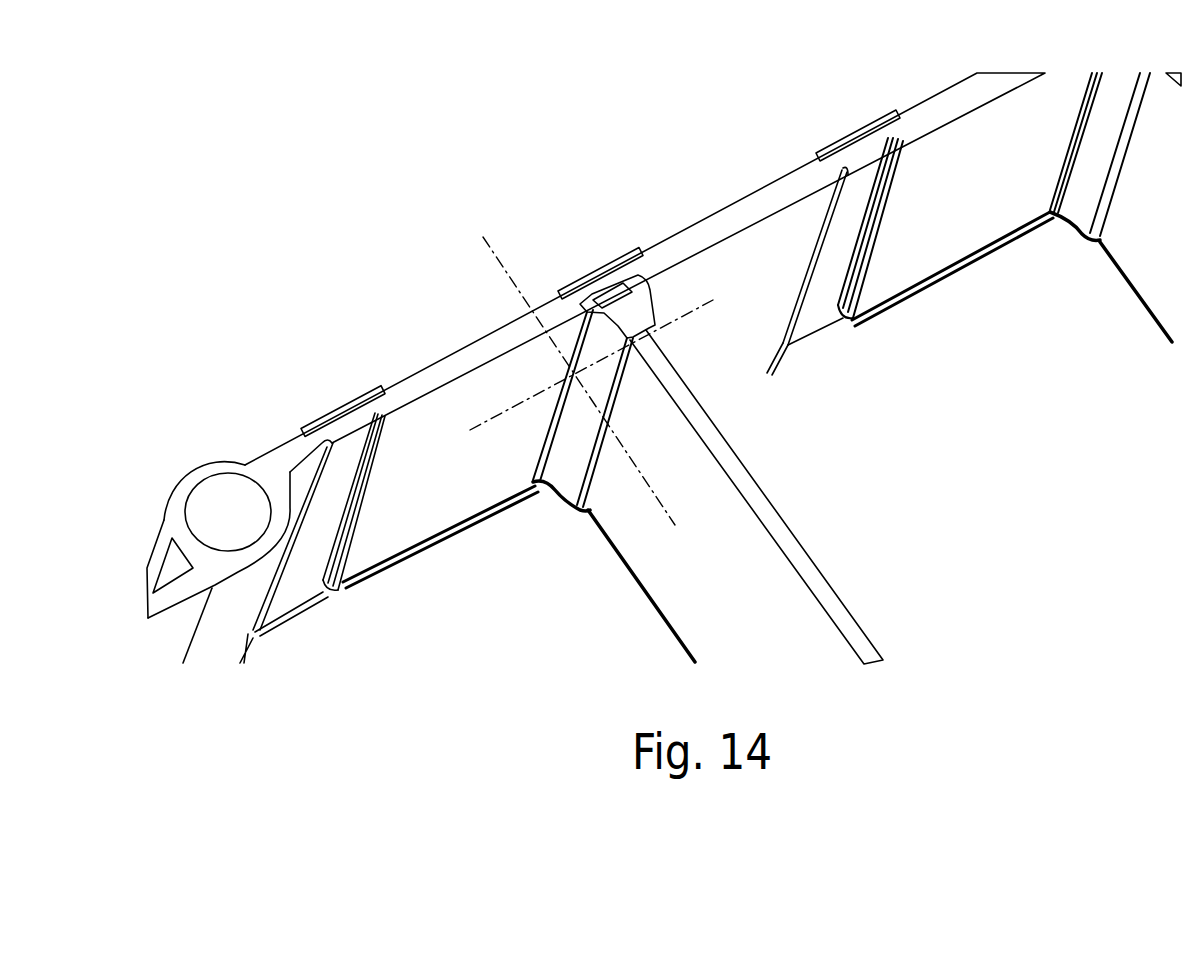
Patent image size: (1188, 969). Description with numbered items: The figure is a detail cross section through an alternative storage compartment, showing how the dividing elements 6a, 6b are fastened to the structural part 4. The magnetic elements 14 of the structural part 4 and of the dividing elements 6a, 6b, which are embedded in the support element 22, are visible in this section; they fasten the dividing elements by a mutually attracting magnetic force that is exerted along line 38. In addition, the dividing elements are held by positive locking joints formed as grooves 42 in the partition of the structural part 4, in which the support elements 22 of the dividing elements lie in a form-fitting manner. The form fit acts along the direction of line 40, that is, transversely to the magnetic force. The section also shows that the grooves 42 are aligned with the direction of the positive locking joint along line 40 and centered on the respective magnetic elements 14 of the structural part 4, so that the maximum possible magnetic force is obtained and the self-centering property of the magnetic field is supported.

The structural part 4 is at (963, 228).
The dividing element 6a is at (793, 621).
The dividing element 6b is at (1133, 247).
The magnetic element 14 is at (343, 413).
The support element 22 is at (563, 440).
The line 38 is at (517, 290).
The line 40 is at (507, 415).
The groove 42 is at (317, 545).